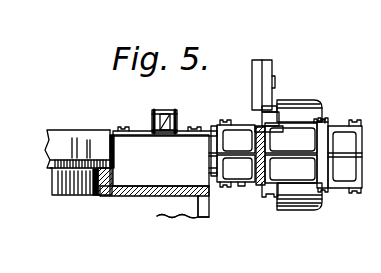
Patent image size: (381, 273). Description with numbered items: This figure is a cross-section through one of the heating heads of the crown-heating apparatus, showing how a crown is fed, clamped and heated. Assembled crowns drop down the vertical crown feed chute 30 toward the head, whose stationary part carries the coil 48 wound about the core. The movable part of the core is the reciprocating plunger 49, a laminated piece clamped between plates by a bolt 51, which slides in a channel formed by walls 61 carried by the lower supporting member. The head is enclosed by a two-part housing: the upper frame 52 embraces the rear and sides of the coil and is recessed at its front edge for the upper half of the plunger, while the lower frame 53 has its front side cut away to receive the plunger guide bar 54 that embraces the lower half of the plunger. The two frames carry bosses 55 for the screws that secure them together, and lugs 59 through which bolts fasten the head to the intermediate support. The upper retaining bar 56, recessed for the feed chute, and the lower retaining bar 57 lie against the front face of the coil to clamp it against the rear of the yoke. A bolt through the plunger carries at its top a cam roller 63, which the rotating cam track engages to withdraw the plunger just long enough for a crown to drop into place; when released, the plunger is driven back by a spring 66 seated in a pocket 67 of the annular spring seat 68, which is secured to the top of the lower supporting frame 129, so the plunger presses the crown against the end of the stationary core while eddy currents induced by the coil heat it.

The crown feed chute 30 is at (252, 85).
The coil 48 is at (316, 104).
The reciprocating plunger 49 is at (212, 127).
The bolt 51 is at (176, 113).
The upper frame 52 is at (271, 136).
The lower frame 53 is at (267, 171).
The plunger guide bar 54 is at (243, 185).
The bosses 55 is at (332, 128).
The upper retaining bar 56 is at (272, 110).
The lower retaining bar 57 is at (266, 197).
The lugs 59 is at (264, 140).
The walls 61 is at (158, 174).
The cam roller 63 is at (155, 124).
The spring 66 is at (115, 131).
The pocket 67 is at (97, 132).
The annular spring seat 68 is at (53, 183).
The lower supporting frame 129 is at (212, 218).